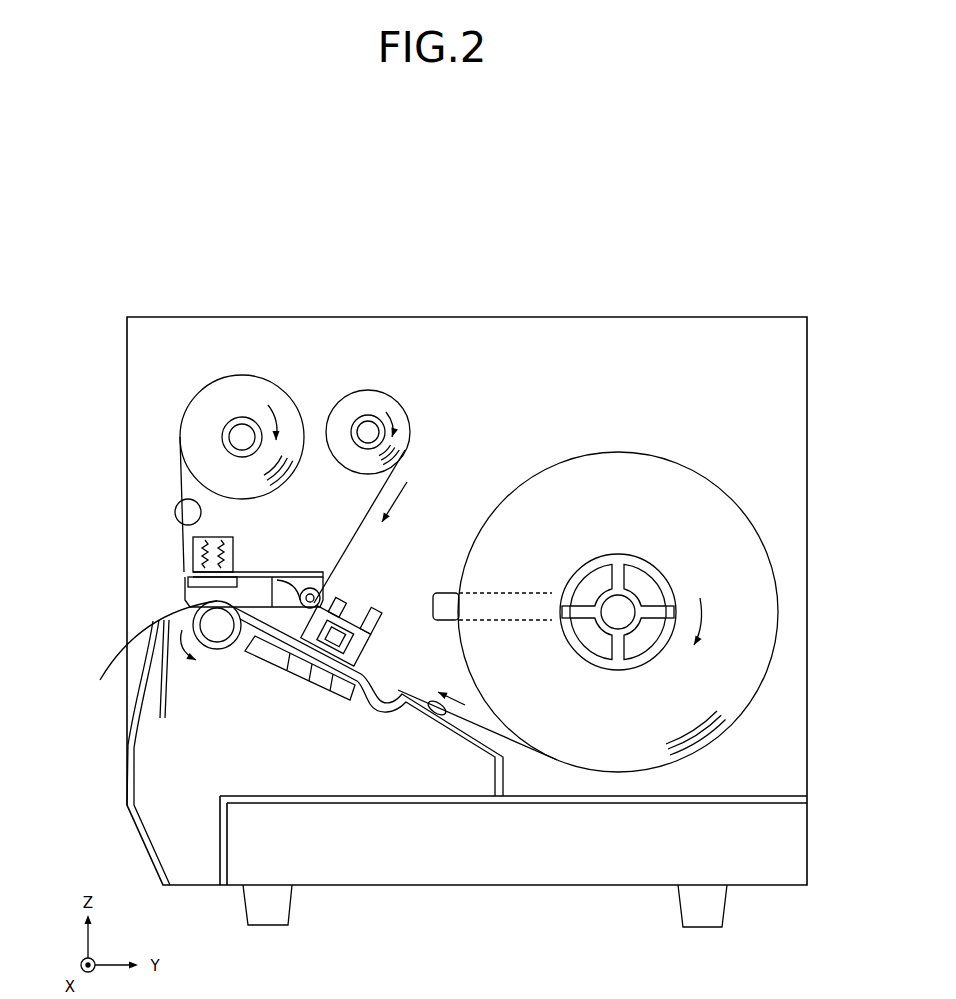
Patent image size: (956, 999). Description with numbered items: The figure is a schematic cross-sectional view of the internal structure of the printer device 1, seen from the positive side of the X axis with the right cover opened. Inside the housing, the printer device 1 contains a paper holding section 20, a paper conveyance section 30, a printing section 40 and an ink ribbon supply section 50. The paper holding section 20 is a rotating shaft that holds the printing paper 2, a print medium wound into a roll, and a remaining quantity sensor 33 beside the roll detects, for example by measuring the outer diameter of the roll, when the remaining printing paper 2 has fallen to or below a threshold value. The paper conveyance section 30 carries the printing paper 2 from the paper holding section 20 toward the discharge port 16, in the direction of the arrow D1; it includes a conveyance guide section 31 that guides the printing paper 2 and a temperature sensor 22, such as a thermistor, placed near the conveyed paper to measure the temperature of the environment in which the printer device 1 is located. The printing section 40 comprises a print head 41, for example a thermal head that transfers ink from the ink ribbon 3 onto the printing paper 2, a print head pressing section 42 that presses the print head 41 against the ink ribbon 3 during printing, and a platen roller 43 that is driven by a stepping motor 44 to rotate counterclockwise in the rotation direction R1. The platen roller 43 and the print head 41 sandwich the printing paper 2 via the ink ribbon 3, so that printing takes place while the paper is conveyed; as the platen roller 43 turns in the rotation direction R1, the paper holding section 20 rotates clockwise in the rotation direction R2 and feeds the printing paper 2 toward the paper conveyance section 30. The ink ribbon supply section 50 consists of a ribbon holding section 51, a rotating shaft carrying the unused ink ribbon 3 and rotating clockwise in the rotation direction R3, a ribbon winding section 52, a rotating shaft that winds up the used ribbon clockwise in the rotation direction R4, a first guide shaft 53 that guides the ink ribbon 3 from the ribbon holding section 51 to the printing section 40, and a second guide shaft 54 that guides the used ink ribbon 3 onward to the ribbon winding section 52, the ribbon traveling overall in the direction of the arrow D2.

The printer device 1 is at (637, 297).
The printing paper 2 is at (512, 750).
The ink ribbon 3 is at (180, 455).
The discharge port 16 is at (113, 607).
The paper holding section 20 is at (650, 582).
The temperature sensor 22 is at (378, 648).
The paper conveyance section 30 is at (300, 697).
The conveyance guide section 31 is at (291, 665).
The remaining quantity sensor 33 is at (448, 592).
The printing section 40 is at (262, 550).
The print head 41 is at (188, 575).
The print head pressing section 42 is at (228, 540).
The platen roller 43 is at (215, 642).
The stepping motor 44 is at (232, 648).
The ink ribbon supply section 50 is at (272, 442).
The ribbon holding section 51 is at (370, 425).
The ribbon winding section 52 is at (240, 428).
The first guide shaft 53 is at (322, 598).
The second guide shaft 54 is at (178, 508).
The rotation direction R1 is at (193, 648).
The rotation direction R2 is at (713, 621).
The rotation direction R3 is at (395, 418).
The rotation direction R4 is at (286, 420).
The arrow (paper conveyance direction) D1 is at (449, 684).
The arrow (ink ribbon conveyance direction) D2 is at (406, 502).